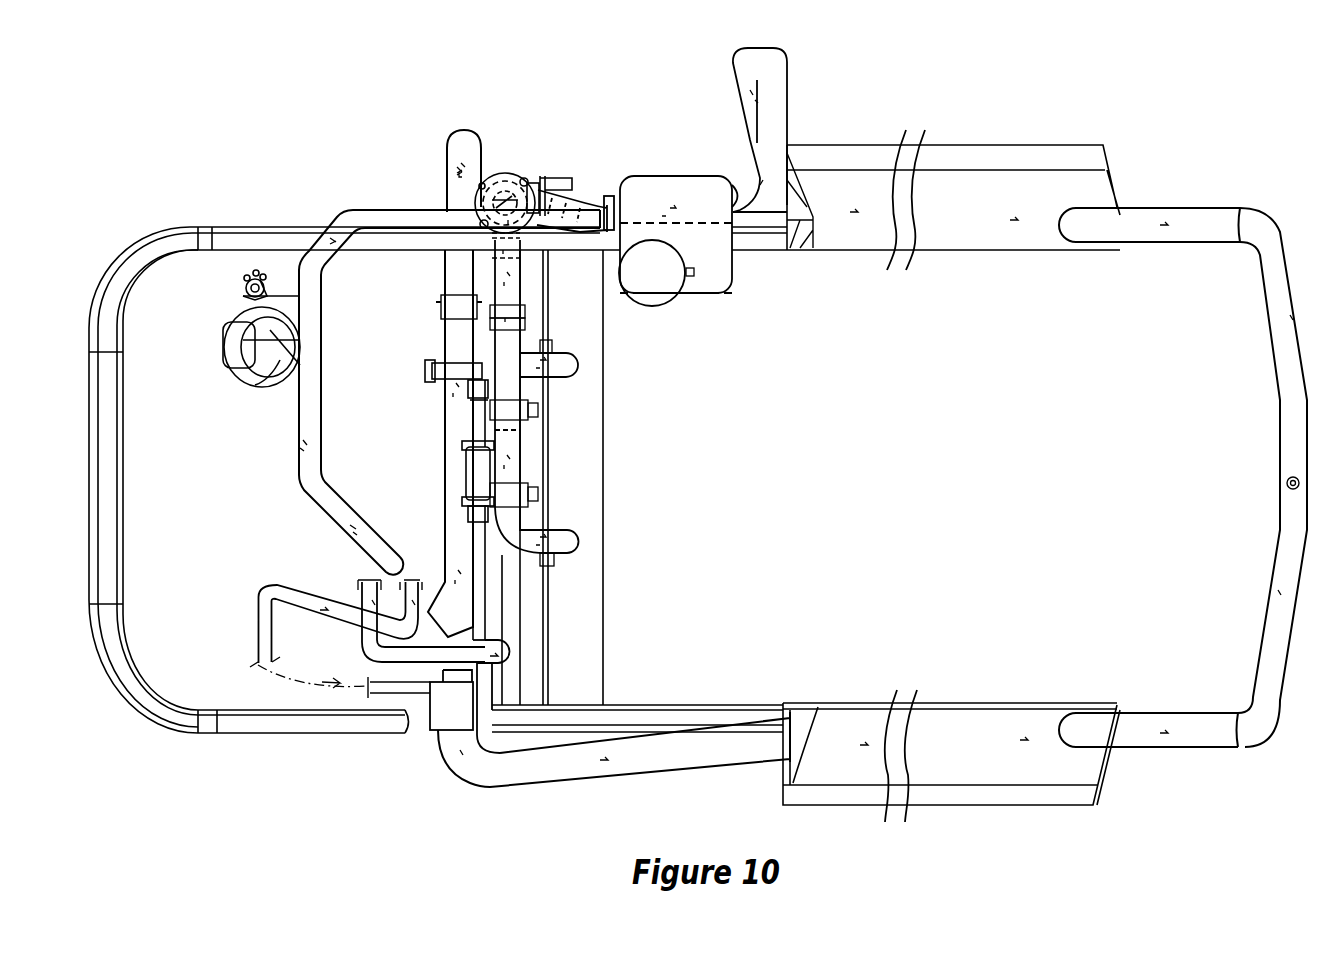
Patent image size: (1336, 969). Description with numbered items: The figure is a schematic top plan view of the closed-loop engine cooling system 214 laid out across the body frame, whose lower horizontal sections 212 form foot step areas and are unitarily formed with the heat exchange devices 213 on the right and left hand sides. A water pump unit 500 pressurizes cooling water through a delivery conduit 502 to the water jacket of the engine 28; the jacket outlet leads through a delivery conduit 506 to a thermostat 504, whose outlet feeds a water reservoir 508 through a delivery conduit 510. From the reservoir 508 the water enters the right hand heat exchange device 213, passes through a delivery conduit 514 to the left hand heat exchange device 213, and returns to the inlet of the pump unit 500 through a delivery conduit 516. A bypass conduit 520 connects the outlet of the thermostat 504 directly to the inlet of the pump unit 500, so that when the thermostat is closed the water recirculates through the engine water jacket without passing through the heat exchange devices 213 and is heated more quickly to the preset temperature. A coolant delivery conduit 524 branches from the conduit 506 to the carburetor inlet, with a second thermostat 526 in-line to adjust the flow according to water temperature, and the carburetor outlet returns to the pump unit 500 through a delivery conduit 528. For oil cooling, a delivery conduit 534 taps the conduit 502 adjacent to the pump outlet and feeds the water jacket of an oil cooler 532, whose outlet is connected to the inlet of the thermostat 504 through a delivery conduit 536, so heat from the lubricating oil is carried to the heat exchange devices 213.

The engine 28 is at (612, 540).
The lower horizontal section 212 is at (1005, 150).
The heat exchange device 213 is at (962, 228).
The engine cooling system 214 is at (1165, 185).
The water pump unit 500 is at (440, 717).
The delivery conduit 502 is at (500, 648).
The thermostat 504 is at (520, 180).
The delivery conduit 506 is at (545, 530).
The water reservoir 508 is at (735, 285).
The delivery conduit 510 is at (595, 210).
The delivery conduit 514 is at (1285, 530).
The delivery conduit 516 is at (665, 757).
The bypass conduit 520 is at (465, 133).
The coolant delivery conduit 524 is at (470, 390).
The thermostat 526 is at (470, 470).
The delivery conduit 528 is at (262, 640).
The oil cooler 532 is at (235, 375).
The delivery conduit 534 is at (300, 437).
The delivery conduit 536 is at (350, 210).